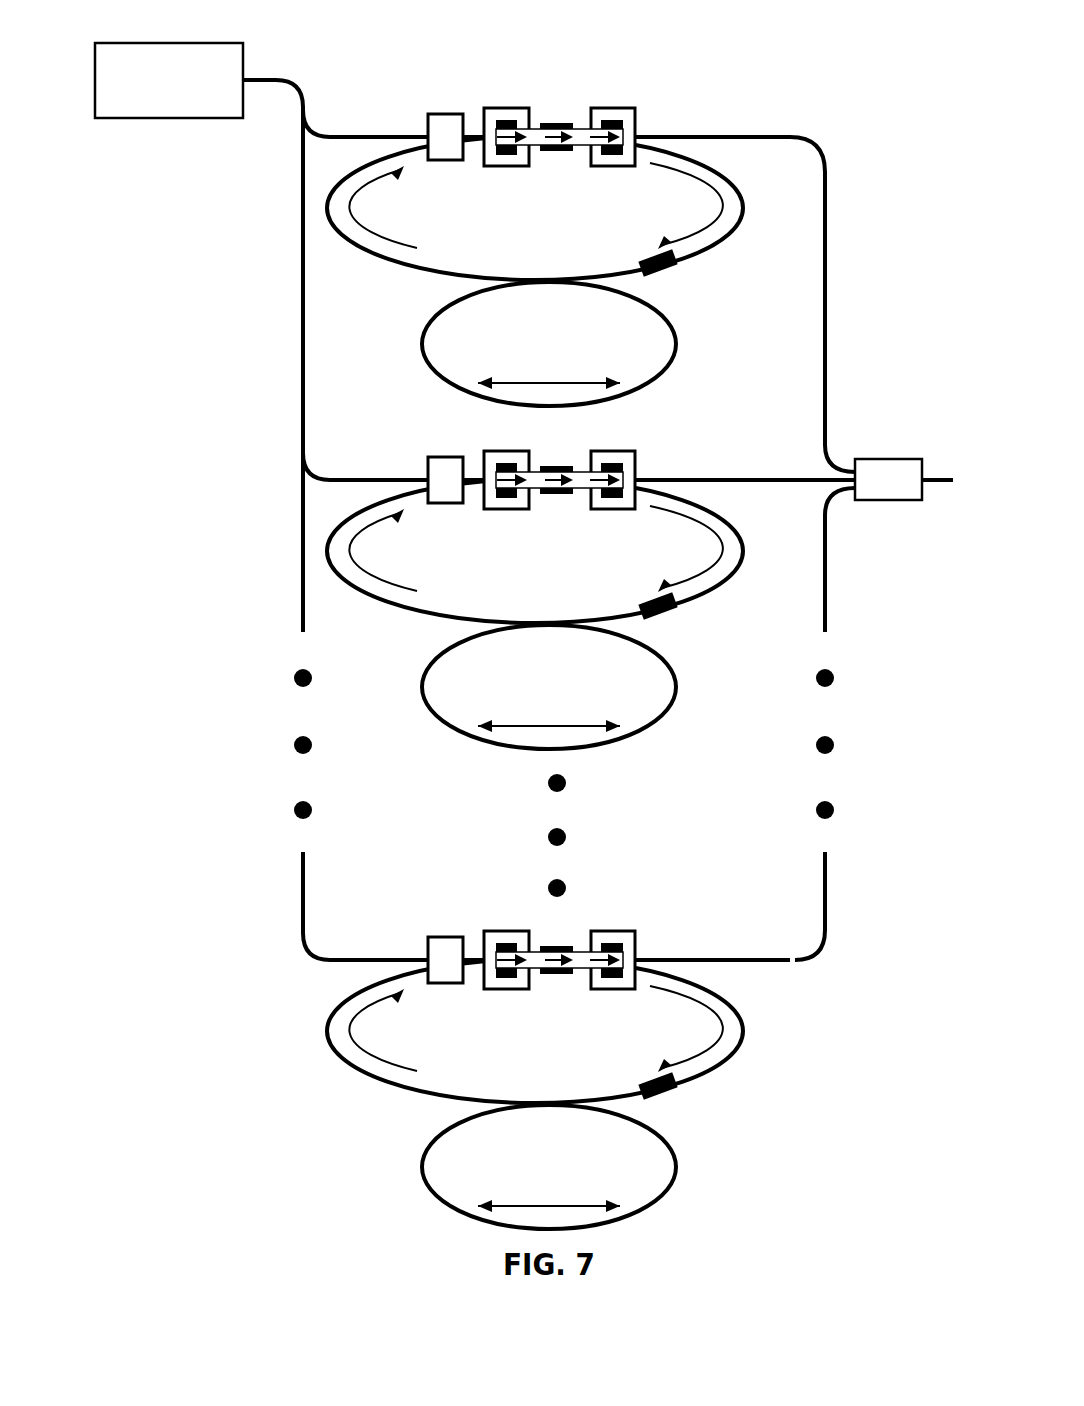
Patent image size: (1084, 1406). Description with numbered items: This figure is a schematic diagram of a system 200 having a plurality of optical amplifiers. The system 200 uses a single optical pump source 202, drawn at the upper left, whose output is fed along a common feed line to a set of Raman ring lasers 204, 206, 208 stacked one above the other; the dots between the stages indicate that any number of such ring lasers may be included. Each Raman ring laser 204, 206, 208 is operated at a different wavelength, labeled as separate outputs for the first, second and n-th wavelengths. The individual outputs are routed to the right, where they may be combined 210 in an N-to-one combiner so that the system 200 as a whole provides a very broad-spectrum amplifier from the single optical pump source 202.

The system 200 is at (545, 38).
The optical pump source 202 is at (190, 43).
The Raman ring laser 204 is at (558, 103).
The Raman ring laser 206 is at (558, 446).
The Raman ring laser 208 is at (558, 926).
The combiner 210 is at (873, 458).